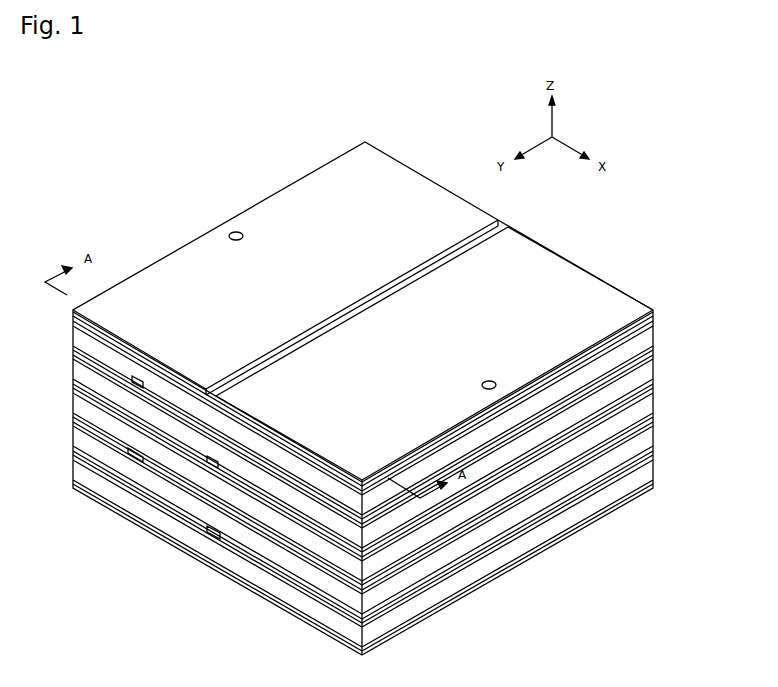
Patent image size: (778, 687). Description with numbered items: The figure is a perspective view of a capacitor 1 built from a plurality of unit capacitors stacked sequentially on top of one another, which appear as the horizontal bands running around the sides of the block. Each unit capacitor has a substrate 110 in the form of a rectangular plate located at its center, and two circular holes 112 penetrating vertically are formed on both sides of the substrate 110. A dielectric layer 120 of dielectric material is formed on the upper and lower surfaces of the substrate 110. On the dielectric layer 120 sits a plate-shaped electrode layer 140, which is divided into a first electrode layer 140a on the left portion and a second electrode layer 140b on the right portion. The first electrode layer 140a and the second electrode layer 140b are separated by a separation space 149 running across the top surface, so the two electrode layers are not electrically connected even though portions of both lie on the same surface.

The capacitor 1 is at (241, 158).
The substrate 110 is at (139, 367).
The circular holes 112 is at (231, 218).
The dielectric layer 120 is at (73, 337).
The conductive pattern 140 is at (137, 381).
The first electrode layer 140a is at (332, 177).
The second electrode layer 140b is at (551, 275).
The separation space 149 is at (433, 262).